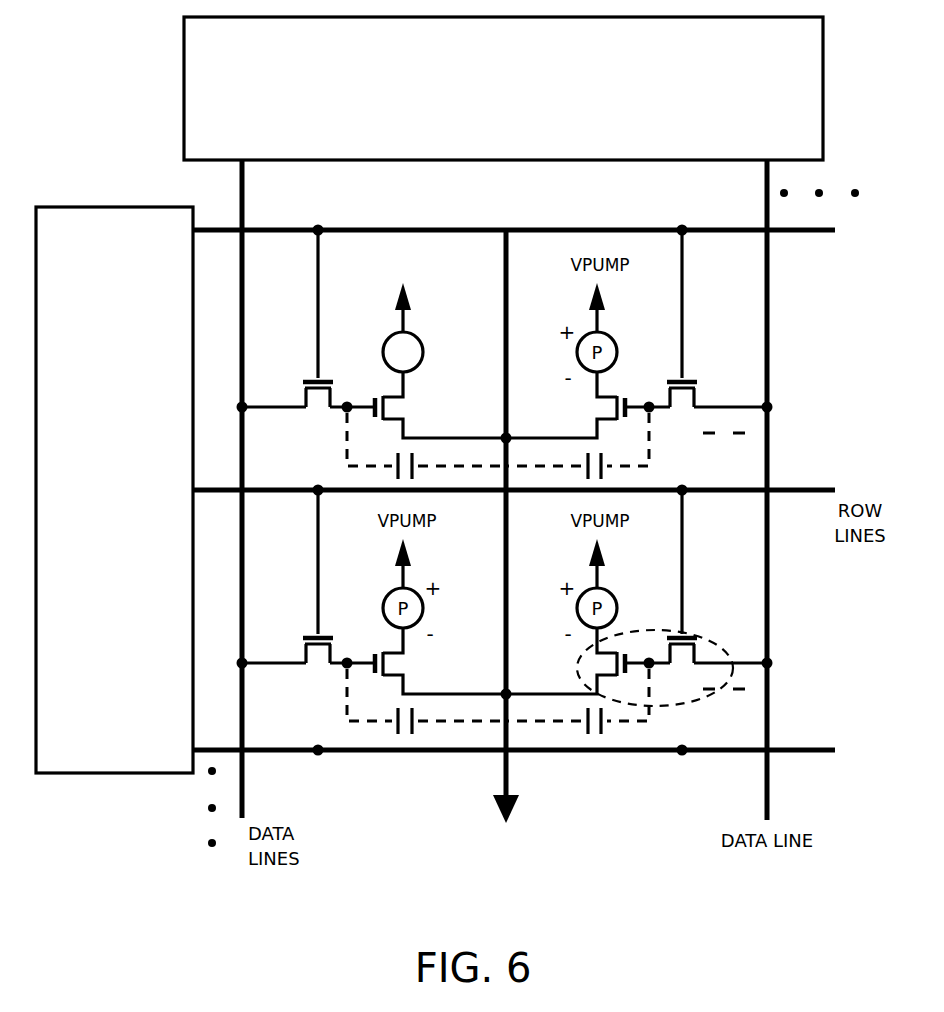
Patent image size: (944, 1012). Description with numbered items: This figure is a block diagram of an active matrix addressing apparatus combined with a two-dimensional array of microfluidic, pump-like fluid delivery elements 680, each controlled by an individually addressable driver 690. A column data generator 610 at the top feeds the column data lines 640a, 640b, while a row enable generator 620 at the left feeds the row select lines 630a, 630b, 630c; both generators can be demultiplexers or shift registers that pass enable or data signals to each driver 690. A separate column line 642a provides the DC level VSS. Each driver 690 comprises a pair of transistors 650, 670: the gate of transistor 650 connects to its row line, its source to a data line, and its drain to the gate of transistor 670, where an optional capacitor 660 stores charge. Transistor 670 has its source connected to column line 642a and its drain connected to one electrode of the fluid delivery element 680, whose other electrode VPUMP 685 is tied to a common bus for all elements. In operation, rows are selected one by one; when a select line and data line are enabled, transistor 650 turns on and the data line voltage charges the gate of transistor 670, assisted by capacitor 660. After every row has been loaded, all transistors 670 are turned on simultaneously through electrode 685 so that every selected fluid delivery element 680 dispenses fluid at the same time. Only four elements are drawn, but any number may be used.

The column data generator 610 is at (465, 127).
The row enable generator 620 is at (90, 391).
The row select line 630a is at (777, 233).
The row select line 630b is at (780, 488).
The row select line 630c is at (777, 752).
The column data line 640a is at (242, 781).
The column data line 640b is at (767, 775).
The column line 642a is at (506, 771).
The transistor 650 is at (312, 380).
The capacitor 660 is at (415, 463).
The transistor 670 is at (402, 398).
The fluid delivery element 680 is at (410, 337).
The electrode 685 is at (397, 300).
The driver 690 is at (712, 641).